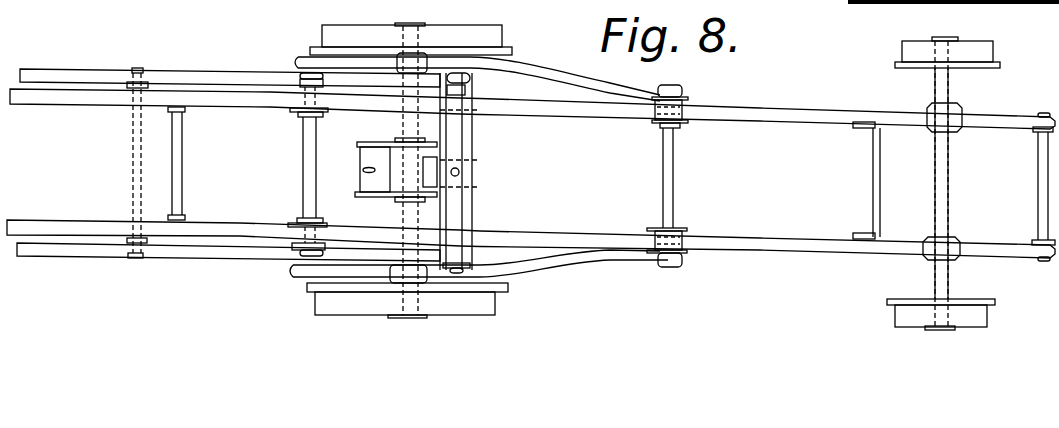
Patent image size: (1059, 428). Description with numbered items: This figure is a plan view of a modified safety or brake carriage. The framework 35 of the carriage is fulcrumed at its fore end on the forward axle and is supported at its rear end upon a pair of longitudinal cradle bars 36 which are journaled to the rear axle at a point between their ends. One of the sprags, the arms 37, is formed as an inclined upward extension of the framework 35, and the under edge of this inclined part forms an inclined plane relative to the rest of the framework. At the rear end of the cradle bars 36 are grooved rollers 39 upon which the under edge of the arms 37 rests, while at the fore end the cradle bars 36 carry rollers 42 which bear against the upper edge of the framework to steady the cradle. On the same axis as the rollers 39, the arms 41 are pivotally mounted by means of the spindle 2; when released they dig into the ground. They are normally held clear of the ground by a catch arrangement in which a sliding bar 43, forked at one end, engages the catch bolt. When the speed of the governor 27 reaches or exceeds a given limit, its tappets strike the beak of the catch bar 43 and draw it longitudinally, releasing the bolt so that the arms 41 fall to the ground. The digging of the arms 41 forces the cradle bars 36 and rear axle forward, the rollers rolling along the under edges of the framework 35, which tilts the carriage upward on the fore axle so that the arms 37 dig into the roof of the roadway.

The spindle 2 is at (310, 180).
The governor 27 is at (368, 157).
The framework of the carriage 35 is at (795, 112).
The cradle bars 36 is at (542, 78).
The arms or sprags 37 is at (98, 98).
The grooved rollers 39 is at (293, 115).
The arms 41 is at (203, 78).
The rollers 42 is at (677, 110).
The sliding bar 43 is at (430, 167).